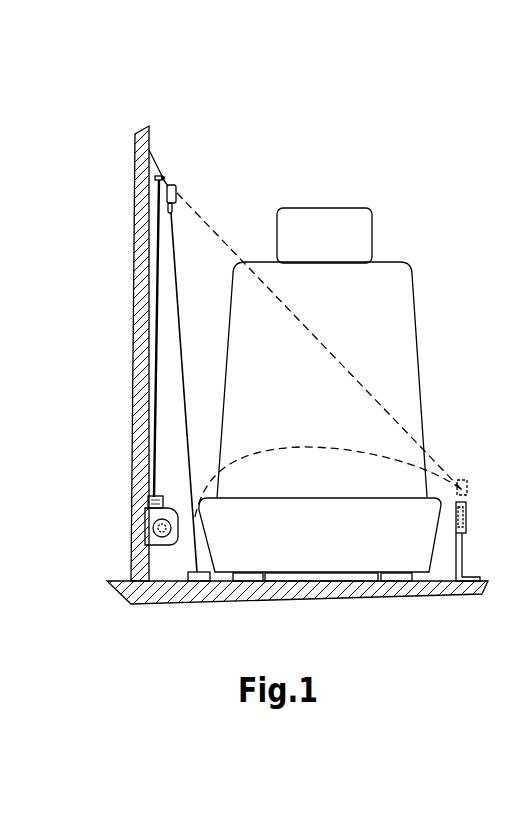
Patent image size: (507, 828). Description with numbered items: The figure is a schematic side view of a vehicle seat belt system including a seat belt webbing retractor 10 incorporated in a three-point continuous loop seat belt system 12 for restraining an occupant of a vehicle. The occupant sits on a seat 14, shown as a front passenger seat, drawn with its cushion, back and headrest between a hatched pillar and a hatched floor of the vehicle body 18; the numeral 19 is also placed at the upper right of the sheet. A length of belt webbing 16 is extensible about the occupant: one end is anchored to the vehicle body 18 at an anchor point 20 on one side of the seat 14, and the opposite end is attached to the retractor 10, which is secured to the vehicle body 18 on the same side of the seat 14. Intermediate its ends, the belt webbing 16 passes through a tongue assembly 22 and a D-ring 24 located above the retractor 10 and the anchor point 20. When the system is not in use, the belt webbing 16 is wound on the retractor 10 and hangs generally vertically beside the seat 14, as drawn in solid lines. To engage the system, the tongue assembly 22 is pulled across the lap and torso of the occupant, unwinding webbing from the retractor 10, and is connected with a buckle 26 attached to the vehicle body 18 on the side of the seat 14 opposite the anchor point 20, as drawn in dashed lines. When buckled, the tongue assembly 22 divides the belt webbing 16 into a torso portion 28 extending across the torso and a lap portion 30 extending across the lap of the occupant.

The seat belt webbing retractor 10 is at (160, 560).
The three-point continuous loop seat belt system 12 is at (408, 232).
The seat 14 is at (408, 268).
The belt webbing 16 is at (186, 377).
The vehicle body 18 is at (133, 603).
The vehicle body 19 is at (495, 145).
The anchor point 20 is at (205, 572).
The tongue assembly 22 is at (178, 192).
The D-ring 24 is at (156, 159).
The buckle 26 is at (467, 534).
The torso portion 28 is at (360, 375).
The lap portion 30 is at (338, 446).